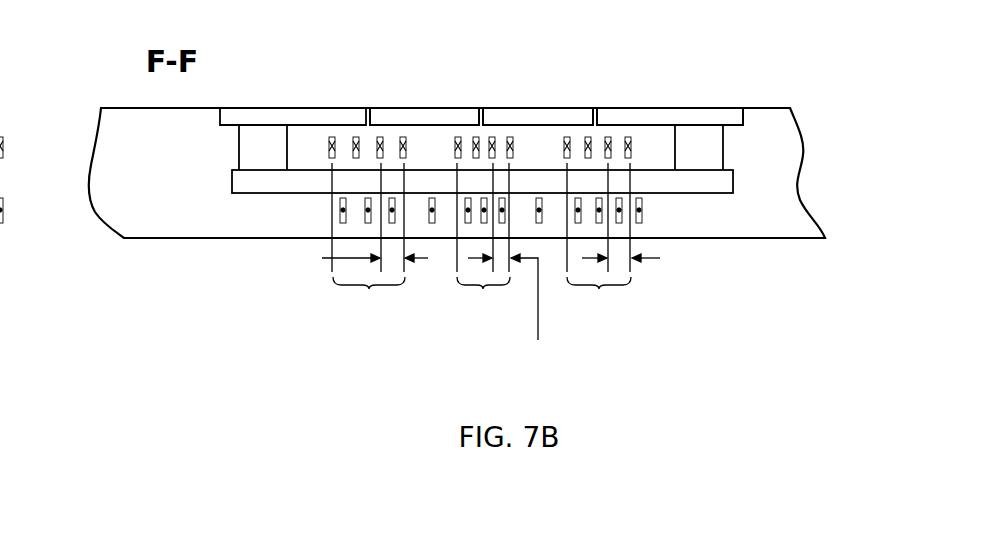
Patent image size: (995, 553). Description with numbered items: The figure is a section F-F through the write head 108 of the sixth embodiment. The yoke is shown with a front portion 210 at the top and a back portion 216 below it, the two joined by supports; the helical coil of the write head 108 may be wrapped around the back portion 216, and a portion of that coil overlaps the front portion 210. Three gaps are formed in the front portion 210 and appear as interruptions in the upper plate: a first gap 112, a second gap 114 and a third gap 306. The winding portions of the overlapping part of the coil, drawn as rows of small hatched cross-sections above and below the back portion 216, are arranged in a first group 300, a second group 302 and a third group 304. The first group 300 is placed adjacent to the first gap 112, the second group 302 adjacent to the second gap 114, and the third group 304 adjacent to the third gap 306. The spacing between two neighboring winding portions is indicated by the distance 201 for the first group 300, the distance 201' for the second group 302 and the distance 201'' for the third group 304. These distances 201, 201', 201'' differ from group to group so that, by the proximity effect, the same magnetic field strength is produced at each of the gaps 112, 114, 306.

The write head 108 is at (124, 93).
The first gap 112 is at (363, 107).
The second gap 114 is at (482, 107).
The third gap 306 is at (593, 107).
The front portion 210 is at (688, 118).
The back portion 216 is at (283, 185).
The first group 300 is at (368, 246).
The second group 302 is at (483, 246).
The third group 304 is at (599, 246).
The distance 201 is at (353, 258).
The distance 201' is at (514, 311).
The distance 201'' is at (647, 258).